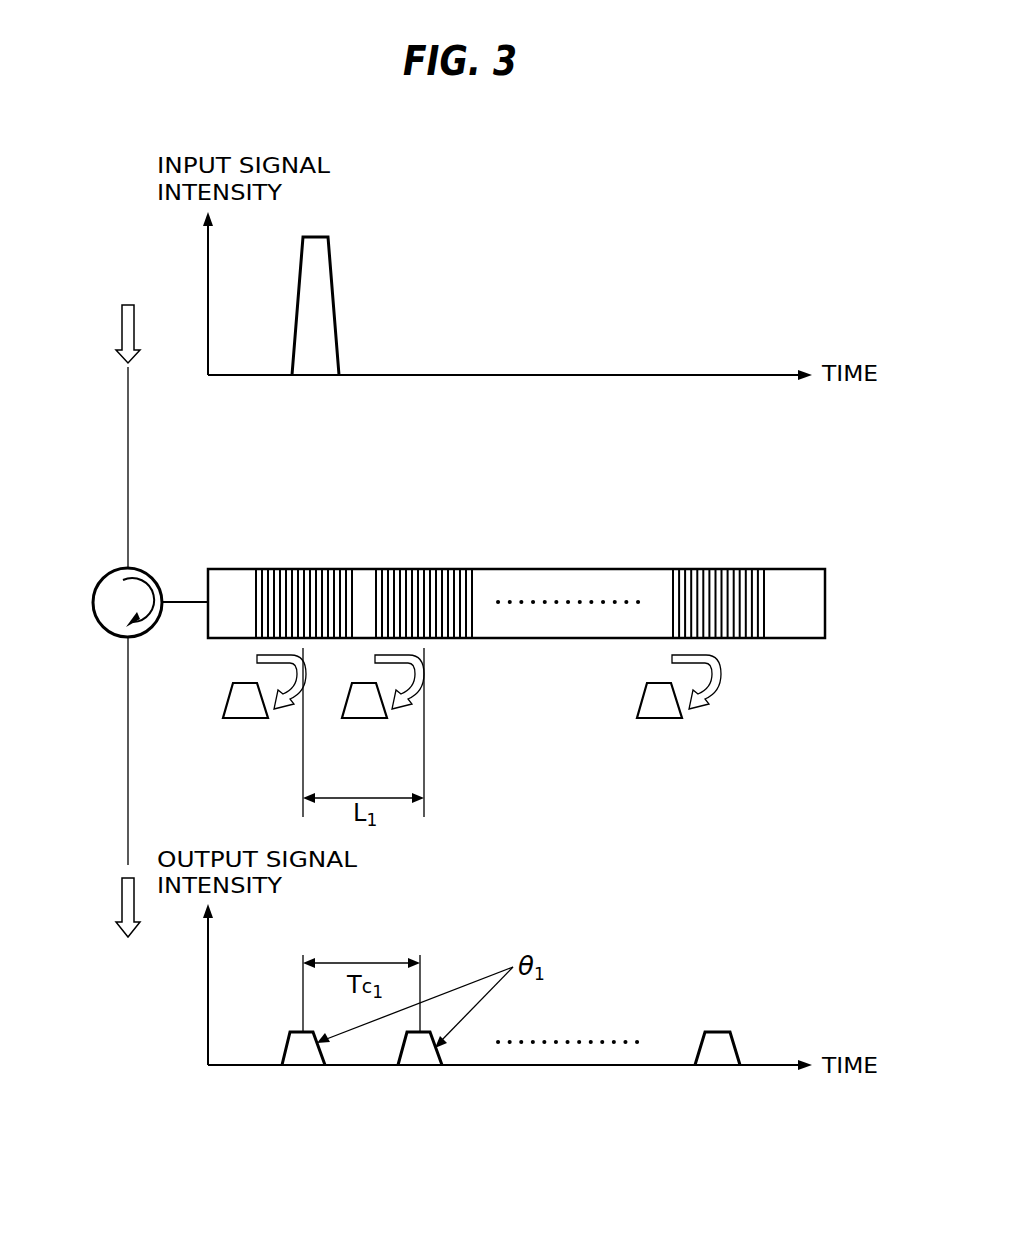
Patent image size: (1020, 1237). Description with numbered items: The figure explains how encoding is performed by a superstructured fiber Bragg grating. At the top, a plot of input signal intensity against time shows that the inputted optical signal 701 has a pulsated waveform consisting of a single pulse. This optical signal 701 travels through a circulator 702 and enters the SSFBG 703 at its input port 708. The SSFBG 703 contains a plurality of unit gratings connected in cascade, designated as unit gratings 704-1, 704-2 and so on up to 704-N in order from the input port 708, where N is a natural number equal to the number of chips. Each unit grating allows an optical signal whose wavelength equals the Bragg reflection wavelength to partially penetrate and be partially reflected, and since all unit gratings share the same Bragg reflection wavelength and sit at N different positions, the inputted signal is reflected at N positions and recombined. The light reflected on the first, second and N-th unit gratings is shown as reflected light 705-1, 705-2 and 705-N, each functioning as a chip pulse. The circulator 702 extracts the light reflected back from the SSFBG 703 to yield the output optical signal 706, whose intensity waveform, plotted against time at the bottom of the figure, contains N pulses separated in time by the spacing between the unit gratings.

The optical signal 701 is at (365, 257).
The circulator 702 is at (98, 620).
The SSFBG 703 is at (807, 638).
The unit grating 704-1 is at (352, 558).
The unit grating 704-2 is at (472, 558).
The unit grating 704-N is at (765, 558).
The reflected light 705-1 is at (247, 718).
The reflected light 705-2 is at (366, 718).
The reflected light 705-N is at (661, 718).
The output optical signal 706 is at (765, 1030).
The input port 708 is at (178, 600).